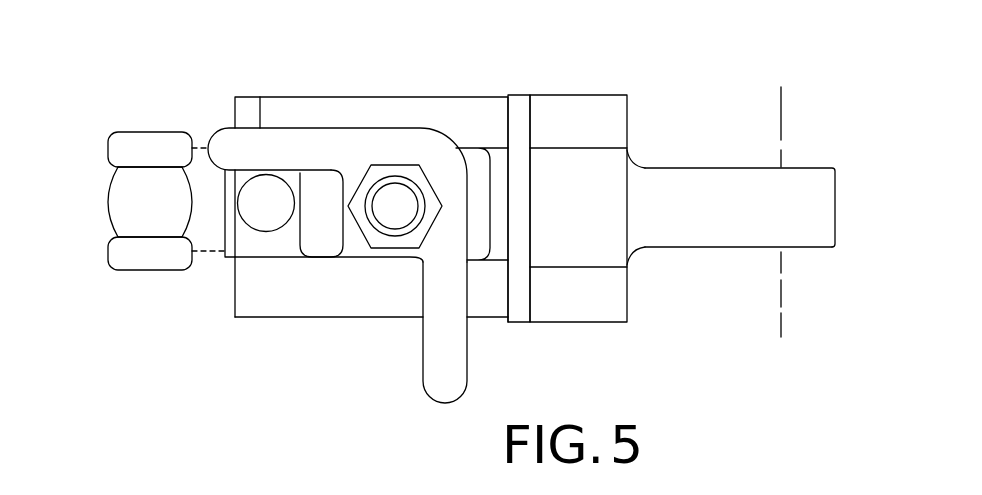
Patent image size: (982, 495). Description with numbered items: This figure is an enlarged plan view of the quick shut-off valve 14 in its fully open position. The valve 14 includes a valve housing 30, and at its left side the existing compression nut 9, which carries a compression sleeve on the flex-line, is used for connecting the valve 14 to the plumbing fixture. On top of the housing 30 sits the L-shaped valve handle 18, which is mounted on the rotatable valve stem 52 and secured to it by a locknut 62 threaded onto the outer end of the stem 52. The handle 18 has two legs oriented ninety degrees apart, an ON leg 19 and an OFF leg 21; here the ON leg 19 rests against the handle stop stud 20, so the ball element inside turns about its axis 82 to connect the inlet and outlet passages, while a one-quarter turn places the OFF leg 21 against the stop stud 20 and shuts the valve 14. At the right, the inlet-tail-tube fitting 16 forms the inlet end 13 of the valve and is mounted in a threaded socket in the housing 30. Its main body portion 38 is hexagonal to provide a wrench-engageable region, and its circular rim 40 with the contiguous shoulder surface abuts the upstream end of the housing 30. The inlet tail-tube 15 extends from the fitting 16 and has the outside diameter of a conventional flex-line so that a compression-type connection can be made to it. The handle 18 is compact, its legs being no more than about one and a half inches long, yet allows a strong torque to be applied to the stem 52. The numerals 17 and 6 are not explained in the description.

The compression nut 9 is at (140, 142).
The stem 17 is at (200, 258).
The valve housing 30 is at (445, 97).
The quick shut-off valve 14 is at (322, 334).
The ON leg 19 is at (260, 97).
The L-shaped valve handle 18 is at (346, 112).
The OFF leg 21 is at (468, 367).
The handle stop stud 20 is at (271, 232).
The locknut 62 is at (383, 165).
The rotatable valve stem 52 is at (401, 224).
The axis 82 is at (401, 197).
The circular rim 40 is at (523, 94).
The main body portion 38 is at (581, 113).
The inlet end 13 is at (630, 150).
The inlet tail-tube 15 is at (823, 168).
The inlet-tail-tube fitting 16 is at (696, 265).
The section line 6- 6 is at (797, 100).